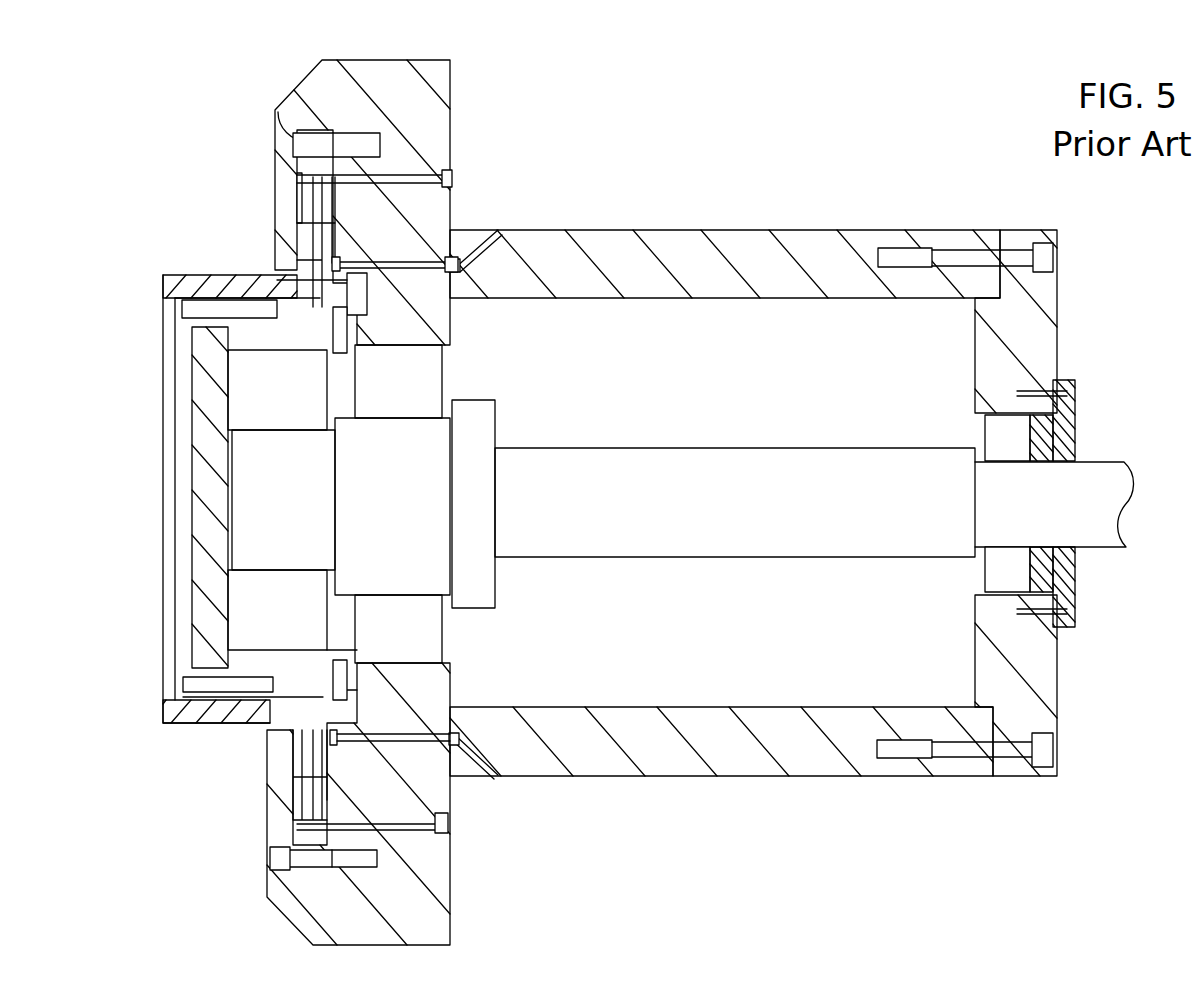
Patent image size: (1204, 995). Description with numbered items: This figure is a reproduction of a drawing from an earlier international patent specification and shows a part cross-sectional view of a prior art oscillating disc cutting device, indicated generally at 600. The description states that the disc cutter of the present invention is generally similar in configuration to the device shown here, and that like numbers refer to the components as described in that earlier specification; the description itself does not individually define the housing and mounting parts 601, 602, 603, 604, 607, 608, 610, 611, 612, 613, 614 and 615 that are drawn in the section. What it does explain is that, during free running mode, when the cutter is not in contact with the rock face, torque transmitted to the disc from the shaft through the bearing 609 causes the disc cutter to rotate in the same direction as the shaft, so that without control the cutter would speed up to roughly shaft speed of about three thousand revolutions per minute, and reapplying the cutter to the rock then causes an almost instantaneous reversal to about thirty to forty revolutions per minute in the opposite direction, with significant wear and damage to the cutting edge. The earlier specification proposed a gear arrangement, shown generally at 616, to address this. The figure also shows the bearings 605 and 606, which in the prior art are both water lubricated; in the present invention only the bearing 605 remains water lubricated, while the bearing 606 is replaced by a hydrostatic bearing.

The prior art motor assembly 600 is at (764, 178).
The front end plate 601 is at (390, 888).
The rear housing cover 602 is at (218, 712).
The seal ring 603 is at (278, 797).
The fastening bolt 604 is at (287, 837).
The bearing 605 is at (298, 178).
The bearing 606 is at (298, 207).
The fastening bolt 607 is at (392, 181).
The bushing 608 is at (283, 107).
The bearing 609 is at (270, 412).
The rotor 610 is at (405, 373).
The bearing 611 is at (1010, 440).
The shaft 612 is at (706, 478).
The cover flange 613 is at (219, 224).
The sensor 614 is at (347, 292).
The stator winding 615 is at (336, 362).
The gear arrangement 616 is at (360, 724).